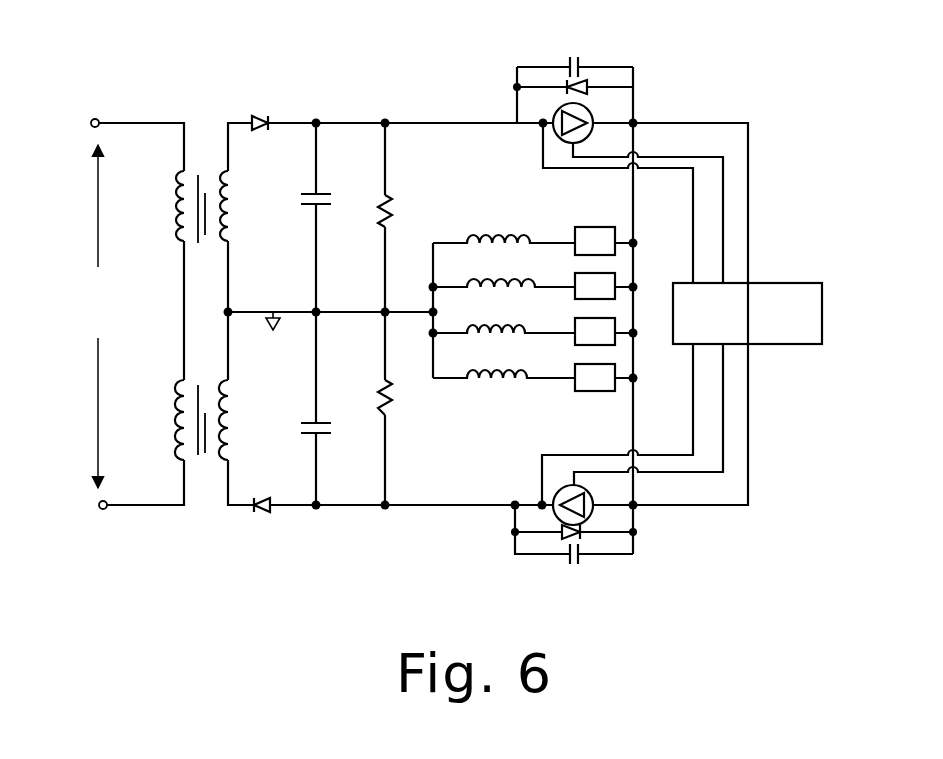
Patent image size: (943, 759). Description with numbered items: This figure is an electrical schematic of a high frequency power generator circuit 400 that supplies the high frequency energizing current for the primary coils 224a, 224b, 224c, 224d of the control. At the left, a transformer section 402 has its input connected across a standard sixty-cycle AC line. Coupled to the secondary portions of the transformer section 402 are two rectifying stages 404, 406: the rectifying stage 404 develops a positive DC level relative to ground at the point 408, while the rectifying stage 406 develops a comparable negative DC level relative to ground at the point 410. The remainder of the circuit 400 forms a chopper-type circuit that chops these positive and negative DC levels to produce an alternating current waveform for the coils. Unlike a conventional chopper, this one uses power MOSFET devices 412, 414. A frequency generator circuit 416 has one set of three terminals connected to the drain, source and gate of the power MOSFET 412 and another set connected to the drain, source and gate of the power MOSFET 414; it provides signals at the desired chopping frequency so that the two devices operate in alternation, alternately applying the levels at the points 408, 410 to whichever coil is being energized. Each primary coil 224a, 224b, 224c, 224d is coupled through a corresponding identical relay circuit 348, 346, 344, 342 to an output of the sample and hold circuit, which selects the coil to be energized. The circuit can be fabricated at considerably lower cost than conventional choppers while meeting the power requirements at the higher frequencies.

The high frequency power generator circuit 400 is at (716, 526).
The transformer section 402 is at (207, 124).
The rectifying stage 404 is at (304, 100).
The rectifying stage 406 is at (320, 511).
The point of positive DC level 408 is at (385, 121).
The point of negative DC level 410 is at (387, 507).
The power MOSFET device 412 is at (590, 107).
The power MOSFET device 414 is at (594, 512).
The frequency generator circuit 416 is at (776, 345).
The relay circuit 342 is at (600, 392).
The relay circuit 344 is at (601, 346).
The relay circuit 346 is at (596, 299).
The relay circuit 348 is at (598, 226).
The primary coil 224a is at (516, 236).
The primary coil 224b is at (516, 281).
The primary coil 224c is at (518, 323).
The primary coil 224d is at (523, 370).